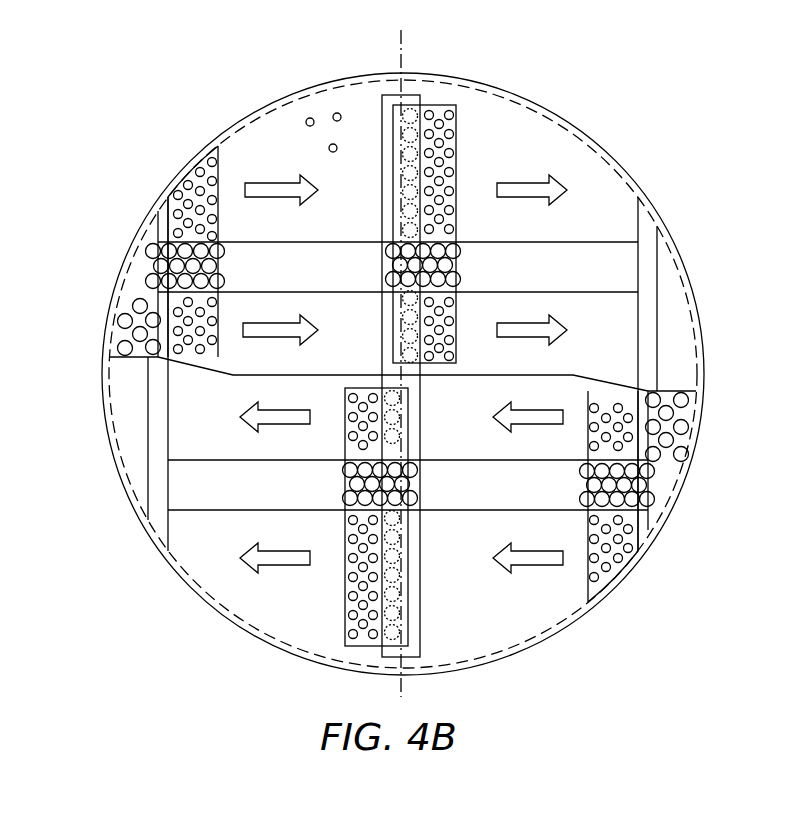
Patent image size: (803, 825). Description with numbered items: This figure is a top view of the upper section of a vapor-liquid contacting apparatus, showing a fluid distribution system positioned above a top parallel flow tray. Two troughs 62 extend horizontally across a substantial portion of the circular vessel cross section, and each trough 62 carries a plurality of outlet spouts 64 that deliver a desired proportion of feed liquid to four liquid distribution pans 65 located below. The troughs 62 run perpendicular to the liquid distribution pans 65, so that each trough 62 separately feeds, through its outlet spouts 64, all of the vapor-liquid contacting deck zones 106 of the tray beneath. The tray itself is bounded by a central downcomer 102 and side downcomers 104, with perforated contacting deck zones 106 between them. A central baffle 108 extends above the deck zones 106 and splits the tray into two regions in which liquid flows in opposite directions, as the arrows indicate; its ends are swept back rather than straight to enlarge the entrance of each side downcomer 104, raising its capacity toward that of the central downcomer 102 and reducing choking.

The trough 62 is at (587, 249).
The outlet spout 64 is at (222, 266).
The liquid distribution pan 65 is at (438, 104).
The central downcomer 102 is at (400, 94).
The side downcomer 104 is at (148, 416).
The vapor-liquid contacting deck zone 106 is at (557, 143).
The central baffle 108 is at (353, 375).